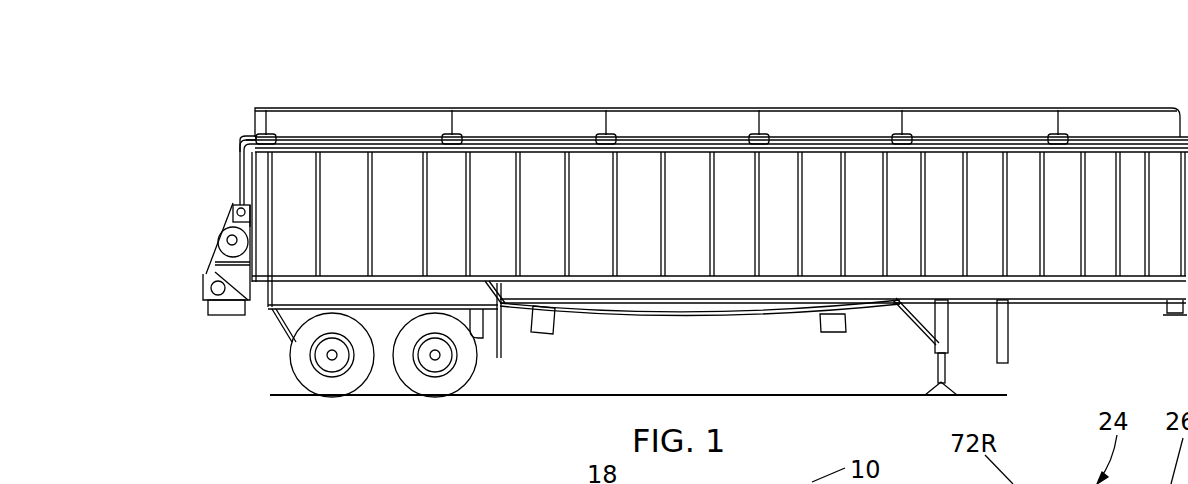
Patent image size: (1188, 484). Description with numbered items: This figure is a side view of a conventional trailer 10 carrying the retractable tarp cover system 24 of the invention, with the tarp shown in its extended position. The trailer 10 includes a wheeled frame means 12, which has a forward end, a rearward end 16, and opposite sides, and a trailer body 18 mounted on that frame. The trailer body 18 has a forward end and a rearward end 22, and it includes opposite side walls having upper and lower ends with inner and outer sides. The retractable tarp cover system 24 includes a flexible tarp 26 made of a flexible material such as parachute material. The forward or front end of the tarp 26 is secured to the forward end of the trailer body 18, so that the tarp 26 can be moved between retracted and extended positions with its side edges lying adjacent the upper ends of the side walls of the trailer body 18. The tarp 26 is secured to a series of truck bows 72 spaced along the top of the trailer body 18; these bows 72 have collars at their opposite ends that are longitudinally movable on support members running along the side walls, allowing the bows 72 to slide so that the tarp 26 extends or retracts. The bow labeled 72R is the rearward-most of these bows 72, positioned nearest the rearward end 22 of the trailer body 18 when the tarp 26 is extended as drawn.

The trailer 10 is at (700, 97).
The wheeled frame means 12 is at (465, 362).
The rearward end 16 is at (215, 200).
The trailer body 18 is at (975, 180).
The rearward end 22 is at (235, 170).
The retractable tarp cover system 24 is at (872, 108).
The flexible tarp 26 is at (537, 120).
The truck bows 72 is at (449, 125).
The front bow 72R is at (279, 107).